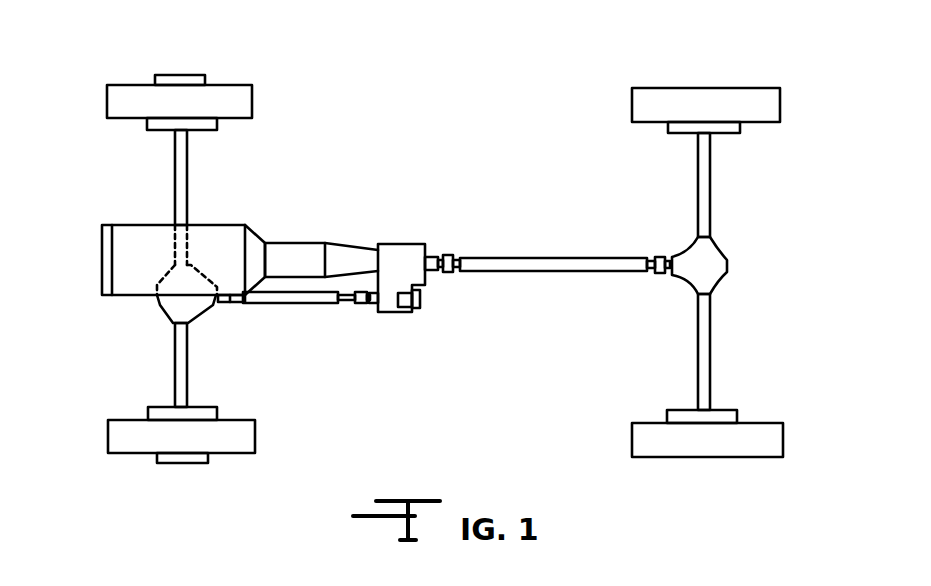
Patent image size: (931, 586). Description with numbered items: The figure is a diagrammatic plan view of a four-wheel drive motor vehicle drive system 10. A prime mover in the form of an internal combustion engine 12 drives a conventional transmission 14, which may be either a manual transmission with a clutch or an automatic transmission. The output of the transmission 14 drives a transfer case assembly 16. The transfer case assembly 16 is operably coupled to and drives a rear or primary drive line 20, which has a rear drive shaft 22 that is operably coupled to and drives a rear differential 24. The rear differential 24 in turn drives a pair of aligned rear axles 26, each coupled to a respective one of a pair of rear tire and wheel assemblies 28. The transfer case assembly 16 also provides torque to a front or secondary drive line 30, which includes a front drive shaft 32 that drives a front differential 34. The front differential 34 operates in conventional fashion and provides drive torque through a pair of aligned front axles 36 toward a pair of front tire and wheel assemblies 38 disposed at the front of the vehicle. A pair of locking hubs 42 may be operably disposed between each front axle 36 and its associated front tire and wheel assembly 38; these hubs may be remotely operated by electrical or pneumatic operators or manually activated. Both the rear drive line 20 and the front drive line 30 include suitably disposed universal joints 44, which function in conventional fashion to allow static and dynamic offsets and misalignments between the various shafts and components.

The motor vehicle drive system 10 is at (442, 100).
The internal combustion engine 12 is at (102, 250).
The transmission 14 is at (293, 253).
The transfer case assembly 16 is at (408, 245).
The rear or primary drive line 20 is at (588, 163).
The rear drive shaft 22 is at (557, 258).
The rear differential 24 is at (717, 262).
The rear axles 26 is at (712, 177).
The rear tire and wheel assemblies 28 is at (718, 80).
The front or secondary drive line 30 is at (67, 355).
The front drive shaft 32 is at (273, 303).
The front differential 34 is at (167, 310).
The front axles 36 is at (175, 158).
The front tire and wheel assemblies 38 is at (100, 87).
The locking hubs 42 is at (178, 80).
The universal joints 44 is at (447, 252).